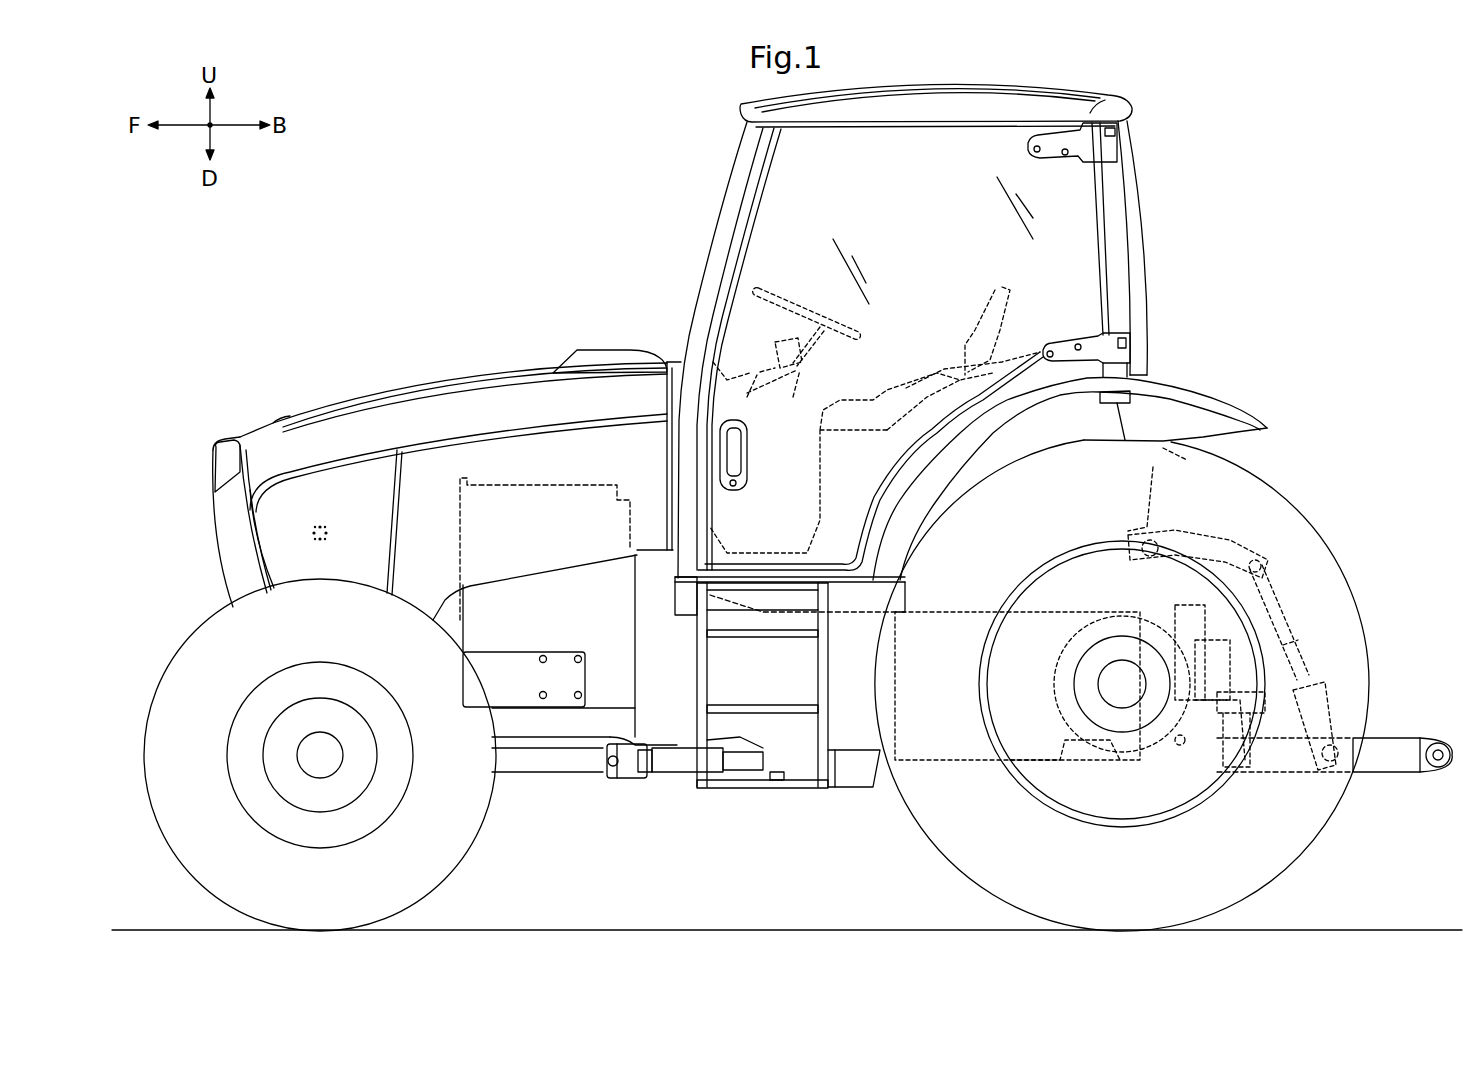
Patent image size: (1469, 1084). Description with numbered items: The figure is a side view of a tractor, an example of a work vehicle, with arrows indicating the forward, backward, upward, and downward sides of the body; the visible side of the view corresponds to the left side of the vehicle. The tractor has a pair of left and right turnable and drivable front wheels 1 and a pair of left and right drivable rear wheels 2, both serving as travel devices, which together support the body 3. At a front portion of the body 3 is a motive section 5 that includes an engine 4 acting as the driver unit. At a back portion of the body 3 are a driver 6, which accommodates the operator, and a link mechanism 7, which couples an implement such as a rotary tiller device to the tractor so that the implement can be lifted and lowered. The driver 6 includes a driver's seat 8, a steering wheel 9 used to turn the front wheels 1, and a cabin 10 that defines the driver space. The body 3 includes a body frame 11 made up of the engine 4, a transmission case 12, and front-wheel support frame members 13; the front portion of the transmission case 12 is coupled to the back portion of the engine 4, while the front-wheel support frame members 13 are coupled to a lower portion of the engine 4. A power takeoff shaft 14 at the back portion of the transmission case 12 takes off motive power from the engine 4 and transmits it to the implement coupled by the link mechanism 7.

The front wheels 1 is at (469, 847).
The rear wheels 2 is at (945, 858).
The body 3 is at (788, 749).
The engine 4 is at (602, 700).
The motive section 5 is at (450, 372).
The driver 6 is at (971, 339).
The link mechanism 7 is at (1394, 786).
The driver's seat 8 is at (982, 314).
The steering wheel 9 is at (798, 308).
The cabin 10 is at (1088, 109).
The body frame 11 is at (794, 756).
The transmission case 12 is at (855, 728).
The front-wheel support frame members 13 is at (514, 660).
The power takeoff shaft 14 is at (1252, 753).